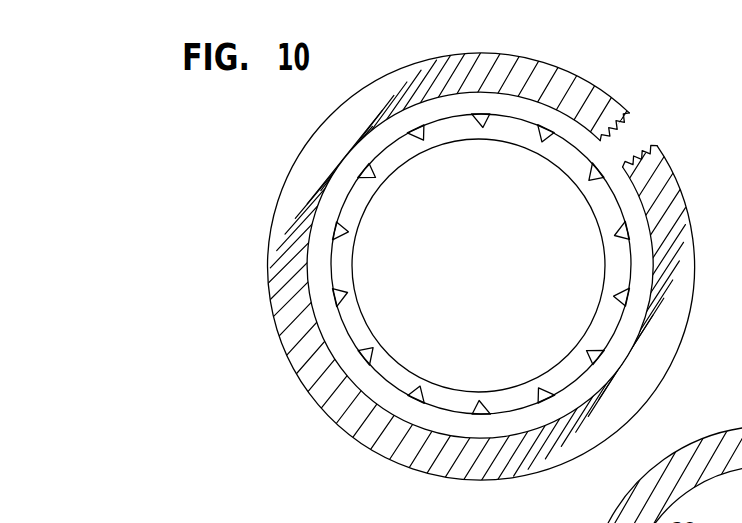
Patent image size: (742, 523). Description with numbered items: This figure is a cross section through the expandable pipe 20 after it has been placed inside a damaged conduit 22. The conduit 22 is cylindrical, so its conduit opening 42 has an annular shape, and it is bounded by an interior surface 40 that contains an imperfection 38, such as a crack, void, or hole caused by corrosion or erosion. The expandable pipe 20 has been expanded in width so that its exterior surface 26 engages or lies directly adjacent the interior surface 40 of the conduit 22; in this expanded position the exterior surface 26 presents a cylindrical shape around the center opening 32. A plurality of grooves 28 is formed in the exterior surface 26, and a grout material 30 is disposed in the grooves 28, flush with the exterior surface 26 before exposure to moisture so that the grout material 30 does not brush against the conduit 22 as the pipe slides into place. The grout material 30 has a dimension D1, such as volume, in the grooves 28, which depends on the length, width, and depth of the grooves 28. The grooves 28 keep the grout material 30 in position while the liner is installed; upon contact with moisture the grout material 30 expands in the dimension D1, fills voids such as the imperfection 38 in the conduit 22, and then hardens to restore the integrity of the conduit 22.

The expandable pipe 20 is at (428, 116).
The conduit 22 is at (532, 57).
The exterior surface 26 is at (385, 147).
The grooves 28 is at (484, 116).
The grout material 30 is at (364, 172).
The center opening 32 is at (483, 281).
The imperfection 38 is at (645, 145).
The interior surface 40 is at (633, 317).
The conduit opening 42 is at (600, 367).
The dimension D1 is at (592, 168).